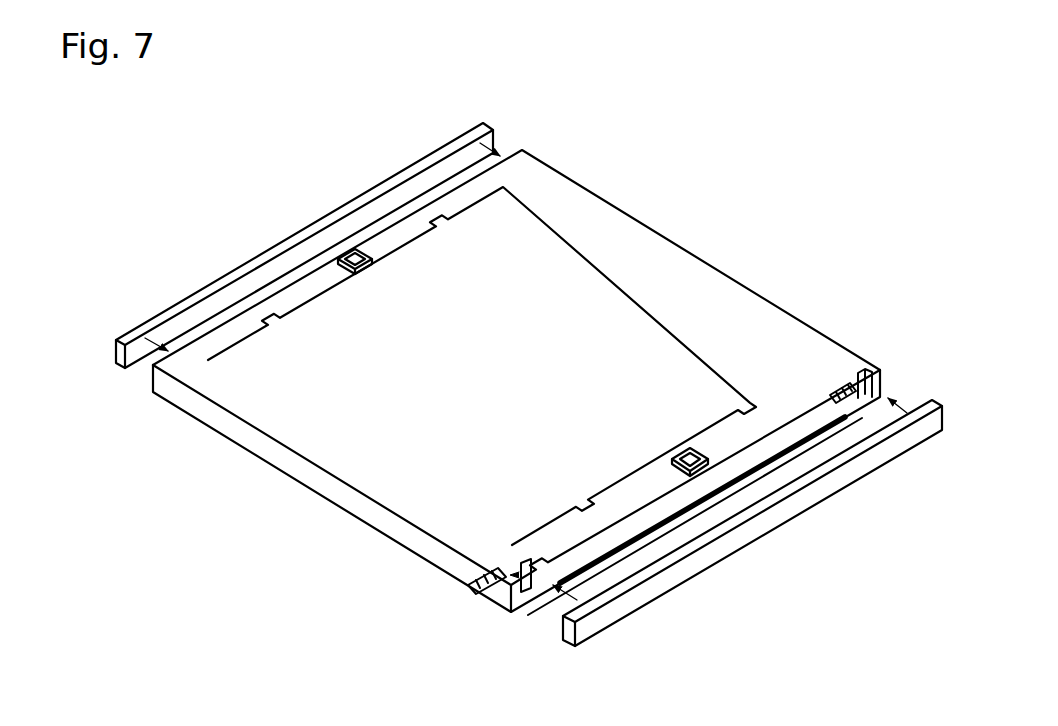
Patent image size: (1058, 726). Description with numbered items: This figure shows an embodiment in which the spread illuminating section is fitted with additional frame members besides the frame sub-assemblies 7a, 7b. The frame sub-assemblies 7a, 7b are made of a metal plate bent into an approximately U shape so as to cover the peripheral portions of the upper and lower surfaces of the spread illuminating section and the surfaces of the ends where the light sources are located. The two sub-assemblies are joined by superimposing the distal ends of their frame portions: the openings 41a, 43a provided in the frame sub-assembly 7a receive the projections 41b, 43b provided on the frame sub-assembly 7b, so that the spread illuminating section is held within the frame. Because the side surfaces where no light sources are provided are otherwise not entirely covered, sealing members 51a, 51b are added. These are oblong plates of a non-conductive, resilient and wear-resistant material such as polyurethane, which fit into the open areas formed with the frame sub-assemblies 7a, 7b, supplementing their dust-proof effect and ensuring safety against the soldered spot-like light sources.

The frame sub-assembly 7a is at (710, 265).
The frame sub-assembly 7b is at (300, 488).
The opening 41a is at (675, 476).
The projection 41b is at (697, 452).
The opening 43a is at (338, 272).
The projection 43b is at (366, 262).
The sealing member 51a is at (788, 507).
The sealing member 51b is at (340, 218).